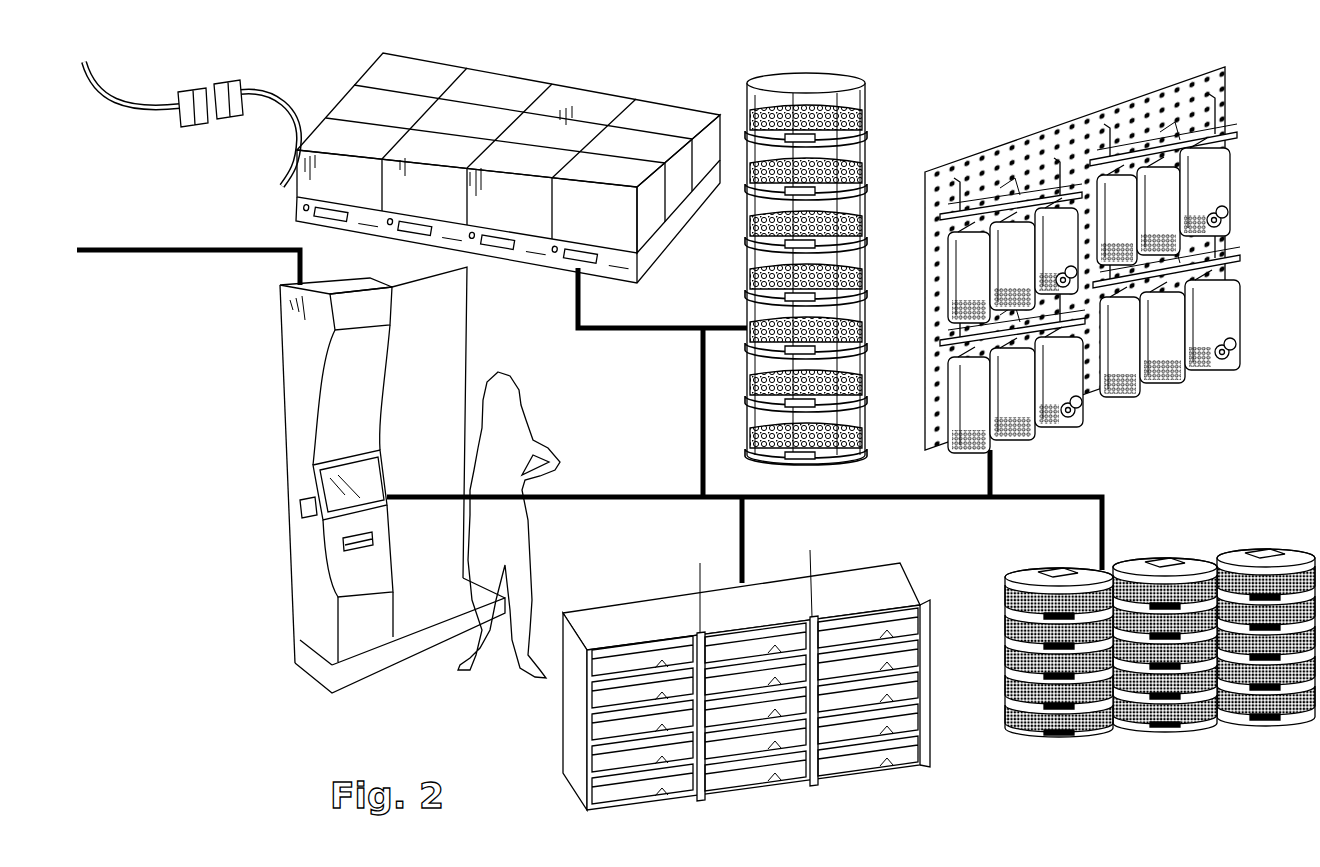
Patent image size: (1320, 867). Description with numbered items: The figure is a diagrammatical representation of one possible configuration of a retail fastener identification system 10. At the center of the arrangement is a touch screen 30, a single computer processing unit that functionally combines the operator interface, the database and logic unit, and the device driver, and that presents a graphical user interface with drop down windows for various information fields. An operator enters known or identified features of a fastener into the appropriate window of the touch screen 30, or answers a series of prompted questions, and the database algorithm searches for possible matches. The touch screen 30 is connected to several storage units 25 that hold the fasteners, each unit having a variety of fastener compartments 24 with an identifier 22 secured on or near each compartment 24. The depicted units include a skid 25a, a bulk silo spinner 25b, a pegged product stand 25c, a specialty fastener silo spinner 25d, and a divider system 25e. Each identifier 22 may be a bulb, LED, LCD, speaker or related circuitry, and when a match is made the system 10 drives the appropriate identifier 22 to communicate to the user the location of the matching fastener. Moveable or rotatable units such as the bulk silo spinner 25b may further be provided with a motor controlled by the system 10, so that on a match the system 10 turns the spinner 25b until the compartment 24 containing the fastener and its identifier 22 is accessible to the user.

The identification system 10 is at (430, 720).
The identifier 22 is at (1183, 162).
The fastener compartment 24 is at (860, 262).
The unit 25 is at (772, 40).
The skid 25a is at (606, 79).
The bulk silo spinner 25b is at (874, 104).
The pegged product stand 25c is at (1185, 391).
The specialty fastener silo spinner 25d is at (1274, 534).
The divider system 25e is at (688, 578).
The touch screen 30 is at (370, 490).